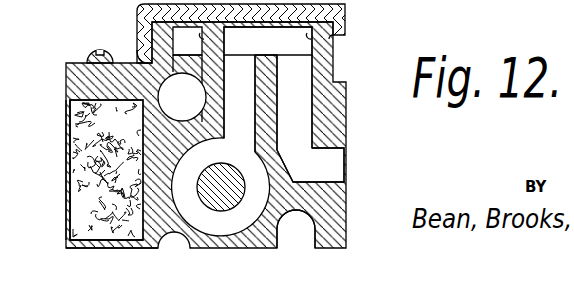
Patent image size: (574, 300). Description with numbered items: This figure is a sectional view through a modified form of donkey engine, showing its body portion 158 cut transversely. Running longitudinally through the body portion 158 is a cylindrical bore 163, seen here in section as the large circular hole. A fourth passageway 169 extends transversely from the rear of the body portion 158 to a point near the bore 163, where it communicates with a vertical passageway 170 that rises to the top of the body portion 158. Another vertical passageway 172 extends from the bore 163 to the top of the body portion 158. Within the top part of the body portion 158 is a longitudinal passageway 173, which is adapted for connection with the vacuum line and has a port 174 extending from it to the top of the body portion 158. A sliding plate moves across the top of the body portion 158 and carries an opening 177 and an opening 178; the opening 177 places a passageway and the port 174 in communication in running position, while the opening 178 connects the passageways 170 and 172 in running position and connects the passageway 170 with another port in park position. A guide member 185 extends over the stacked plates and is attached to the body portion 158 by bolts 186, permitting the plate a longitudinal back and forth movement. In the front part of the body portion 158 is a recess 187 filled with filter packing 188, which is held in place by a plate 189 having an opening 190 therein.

The body portion 158 is at (347, 218).
The cylindrical bore 163 is at (290, 234).
The fourth passageway 169 is at (337, 162).
The vertical passageway 170 is at (300, 100).
The vertical passageway 172 is at (248, 72).
The longitudinal passageway 173 is at (196, 103).
The port 174 is at (183, 62).
The opening 177 is at (222, 36).
The opening 178 is at (340, 36).
The guide member 185 is at (352, 7).
The bolt 186 is at (90, 54).
The recess 187 is at (72, 234).
The filter packing 188 is at (85, 147).
The plate 189 is at (70, 107).
The opening 190 is at (72, 192).